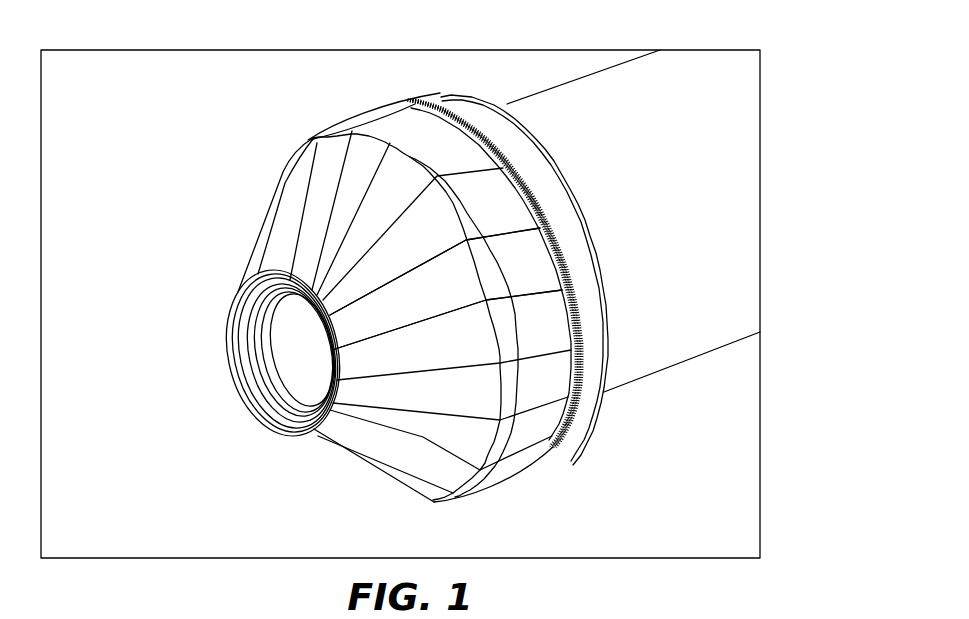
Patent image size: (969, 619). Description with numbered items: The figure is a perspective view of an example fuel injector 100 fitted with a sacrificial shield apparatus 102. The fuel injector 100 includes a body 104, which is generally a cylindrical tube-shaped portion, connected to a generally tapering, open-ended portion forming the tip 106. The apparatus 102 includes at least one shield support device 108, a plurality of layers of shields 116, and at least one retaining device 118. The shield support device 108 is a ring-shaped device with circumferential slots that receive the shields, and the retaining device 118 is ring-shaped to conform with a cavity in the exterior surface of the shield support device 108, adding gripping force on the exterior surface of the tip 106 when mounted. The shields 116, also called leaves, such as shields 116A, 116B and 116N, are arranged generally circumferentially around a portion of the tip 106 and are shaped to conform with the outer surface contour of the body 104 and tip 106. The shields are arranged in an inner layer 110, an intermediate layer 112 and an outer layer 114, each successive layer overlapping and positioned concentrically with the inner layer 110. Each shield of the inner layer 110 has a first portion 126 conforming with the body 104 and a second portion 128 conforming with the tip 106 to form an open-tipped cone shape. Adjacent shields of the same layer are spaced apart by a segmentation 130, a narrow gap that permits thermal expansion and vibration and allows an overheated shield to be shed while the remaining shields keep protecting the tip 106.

The fuel injector 100 is at (733, 140).
The apparatus 102 is at (618, 417).
The body 104 is at (641, 188).
The tip 106 is at (300, 364).
The shield support device 108 is at (617, 305).
The inner layer 110 is at (298, 400).
The intermediate layer 112 is at (300, 400).
The outer layer 114 is at (240, 341).
The shields 116 is at (532, 481).
The shield 116A is at (483, 245).
The shield 116B is at (512, 302).
The shield 116N is at (514, 425).
The retaining device 118 is at (575, 420).
The first portion 126 is at (522, 442).
The second portion 128 is at (377, 477).
The segmentation 130 is at (434, 365).